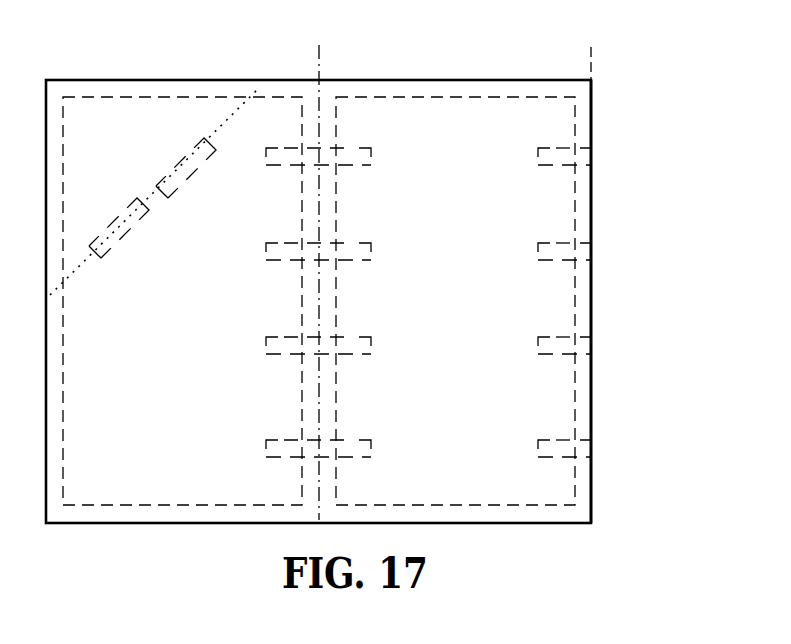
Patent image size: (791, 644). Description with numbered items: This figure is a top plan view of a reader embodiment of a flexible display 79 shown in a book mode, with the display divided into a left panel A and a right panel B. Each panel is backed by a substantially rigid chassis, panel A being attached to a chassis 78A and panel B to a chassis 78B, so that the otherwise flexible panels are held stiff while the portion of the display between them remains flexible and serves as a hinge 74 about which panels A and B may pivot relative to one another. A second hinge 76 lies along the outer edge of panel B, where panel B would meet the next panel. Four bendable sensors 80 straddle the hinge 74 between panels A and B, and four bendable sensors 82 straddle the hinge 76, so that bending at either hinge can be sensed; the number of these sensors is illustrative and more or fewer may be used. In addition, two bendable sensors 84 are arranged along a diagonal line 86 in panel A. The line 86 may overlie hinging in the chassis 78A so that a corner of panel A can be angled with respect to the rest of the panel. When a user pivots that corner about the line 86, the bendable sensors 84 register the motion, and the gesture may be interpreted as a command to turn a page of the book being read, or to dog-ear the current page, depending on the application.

The hinge 74 is at (318, 63).
The hinge 76 is at (592, 65).
The chassis 78A is at (114, 97).
The chassis 78B is at (455, 98).
The display 79 is at (555, 542).
The bendable sensors 80 is at (372, 155).
The bendable sensors 82 is at (592, 158).
The bendable sensors 84 is at (160, 144).
The line 86 is at (88, 258).